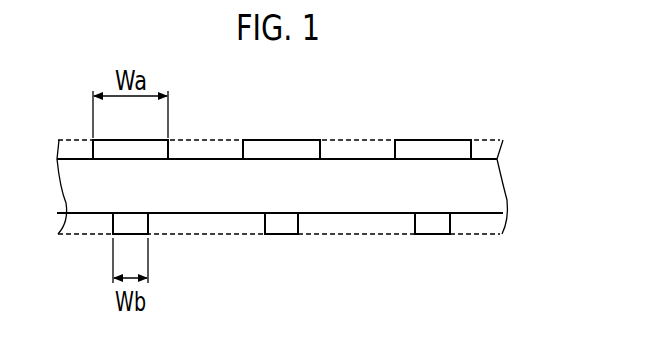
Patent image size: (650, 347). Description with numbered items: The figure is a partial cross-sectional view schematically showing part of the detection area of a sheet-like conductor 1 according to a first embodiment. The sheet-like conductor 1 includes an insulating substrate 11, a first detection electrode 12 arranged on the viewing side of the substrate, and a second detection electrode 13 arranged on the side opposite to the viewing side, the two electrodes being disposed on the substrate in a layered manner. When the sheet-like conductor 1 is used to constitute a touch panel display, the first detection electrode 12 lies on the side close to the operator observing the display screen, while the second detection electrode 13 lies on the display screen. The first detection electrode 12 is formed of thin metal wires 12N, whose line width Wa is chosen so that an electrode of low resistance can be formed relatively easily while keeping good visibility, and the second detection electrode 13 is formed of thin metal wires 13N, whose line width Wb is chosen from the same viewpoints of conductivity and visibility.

The sheet-like conductor 1 is at (315, 194).
The insulating substrate 11 is at (490, 188).
The first detection electrode 12 is at (289, 116).
The thin metal wire 12N is at (282, 150).
The second detection electrode 13 is at (279, 265).
The thin metal wire 13N is at (283, 235).